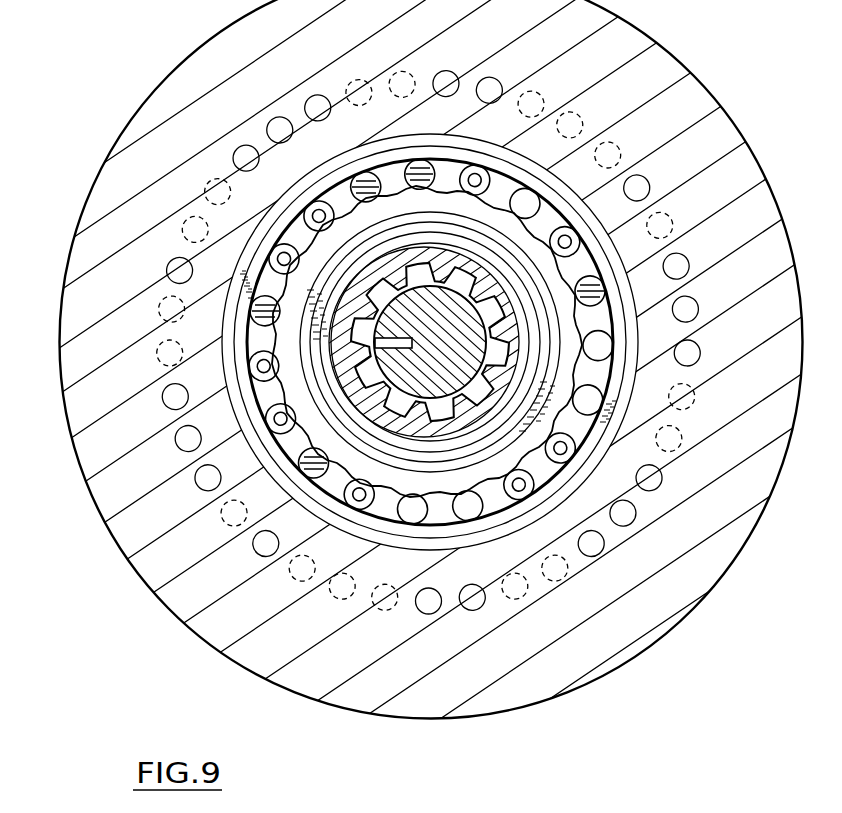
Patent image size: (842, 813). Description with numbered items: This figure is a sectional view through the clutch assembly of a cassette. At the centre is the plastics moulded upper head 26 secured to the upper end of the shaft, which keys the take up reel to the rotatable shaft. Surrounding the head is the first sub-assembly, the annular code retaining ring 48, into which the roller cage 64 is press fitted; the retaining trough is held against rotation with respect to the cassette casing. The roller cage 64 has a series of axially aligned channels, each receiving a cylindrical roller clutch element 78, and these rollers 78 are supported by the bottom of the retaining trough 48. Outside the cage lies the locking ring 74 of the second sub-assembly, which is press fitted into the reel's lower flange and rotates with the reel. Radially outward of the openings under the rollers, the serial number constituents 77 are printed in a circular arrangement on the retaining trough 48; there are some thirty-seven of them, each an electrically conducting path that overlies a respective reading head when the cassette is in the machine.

The upper head 26 is at (396, 286).
The code retaining ring 48 is at (580, 330).
The roller cage 64 is at (492, 215).
The locking ring 74 is at (579, 214).
The serial number constituents 77 is at (662, 221).
The cylindrical roller clutch element 78 is at (597, 354).